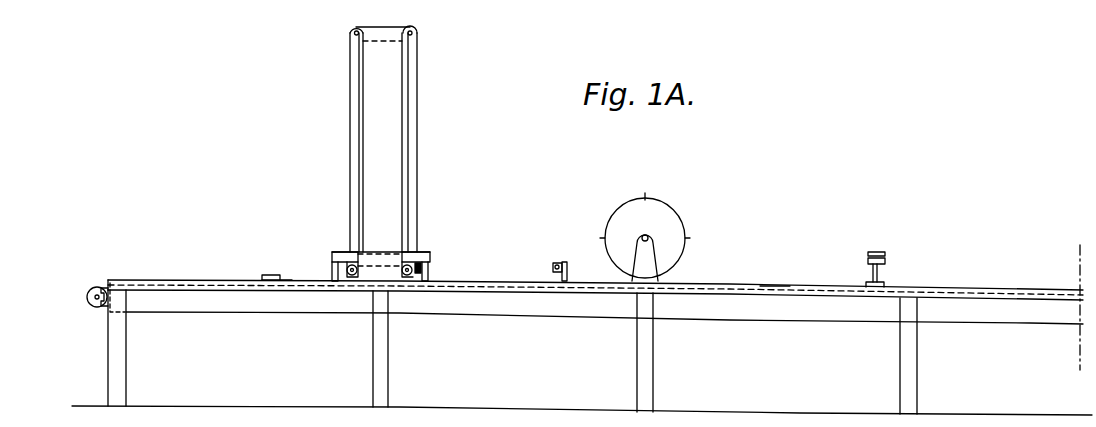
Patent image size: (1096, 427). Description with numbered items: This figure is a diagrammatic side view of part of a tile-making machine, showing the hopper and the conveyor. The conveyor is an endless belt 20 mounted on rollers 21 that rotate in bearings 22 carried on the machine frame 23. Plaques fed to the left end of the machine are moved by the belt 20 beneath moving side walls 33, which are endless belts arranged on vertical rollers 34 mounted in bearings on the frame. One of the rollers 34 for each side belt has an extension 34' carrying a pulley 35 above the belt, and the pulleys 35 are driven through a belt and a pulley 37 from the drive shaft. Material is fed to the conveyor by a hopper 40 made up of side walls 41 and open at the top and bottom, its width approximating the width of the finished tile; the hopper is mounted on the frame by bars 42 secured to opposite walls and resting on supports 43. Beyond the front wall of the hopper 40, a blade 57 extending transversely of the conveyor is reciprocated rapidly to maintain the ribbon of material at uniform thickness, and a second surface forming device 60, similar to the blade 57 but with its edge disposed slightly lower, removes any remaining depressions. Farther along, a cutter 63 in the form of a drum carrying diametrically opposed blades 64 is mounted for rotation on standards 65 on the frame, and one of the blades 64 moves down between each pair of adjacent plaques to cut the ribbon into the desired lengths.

The endless belt 20 is at (582, 328).
The rollers 21 is at (76, 303).
The bearings 22 is at (95, 277).
The machine frame 23 is at (535, 348).
The moving side walls 33 is at (526, 257).
The vertical rollers 34 is at (566, 269).
The extension 34' is at (907, 269).
The pulley 35 is at (900, 246).
The pulley 37 is at (866, 236).
The hopper 40 is at (402, 139).
The side walls 41 is at (406, 142).
The bars 42 is at (394, 245).
The supports 43 is at (395, 262).
The blade 57 is at (422, 305).
The second surface forming device 60 is at (556, 252).
The cutter 63 is at (658, 235).
The blades 64 is at (662, 213).
The standards 65 is at (657, 223).